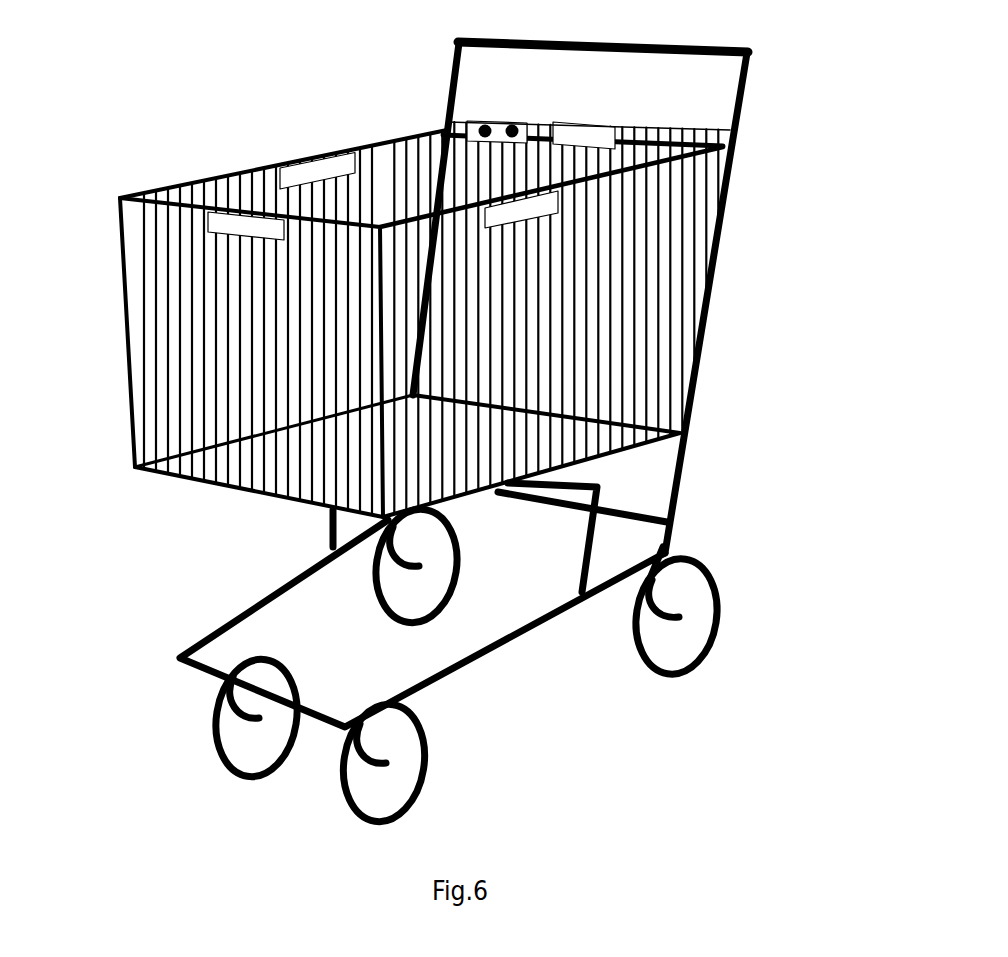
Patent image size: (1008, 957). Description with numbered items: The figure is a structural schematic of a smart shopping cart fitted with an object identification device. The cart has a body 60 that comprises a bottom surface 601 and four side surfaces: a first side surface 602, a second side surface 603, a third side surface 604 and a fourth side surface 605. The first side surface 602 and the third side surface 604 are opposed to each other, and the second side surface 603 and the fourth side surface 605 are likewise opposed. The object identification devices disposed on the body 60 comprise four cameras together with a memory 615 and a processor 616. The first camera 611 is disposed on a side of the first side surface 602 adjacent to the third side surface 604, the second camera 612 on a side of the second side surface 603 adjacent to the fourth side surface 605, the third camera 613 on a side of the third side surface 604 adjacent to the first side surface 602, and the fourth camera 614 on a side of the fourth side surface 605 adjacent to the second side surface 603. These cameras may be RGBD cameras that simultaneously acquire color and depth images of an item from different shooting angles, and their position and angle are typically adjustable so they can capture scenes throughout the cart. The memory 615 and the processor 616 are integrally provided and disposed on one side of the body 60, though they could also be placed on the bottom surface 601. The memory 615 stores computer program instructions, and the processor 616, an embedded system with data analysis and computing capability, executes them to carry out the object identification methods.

The body 60 is at (743, 98).
The bottom surface 601 is at (593, 465).
The first side surface 602 is at (657, 127).
The second side surface 603 is at (647, 170).
The third side surface 604 is at (125, 312).
The fourth side surface 605 is at (212, 177).
The first camera 611 is at (590, 130).
The second camera 612 is at (517, 208).
The third camera 613 is at (218, 225).
The fourth camera 614 is at (338, 165).
The memory 615 is at (478, 118).
The processor 616 is at (513, 118).